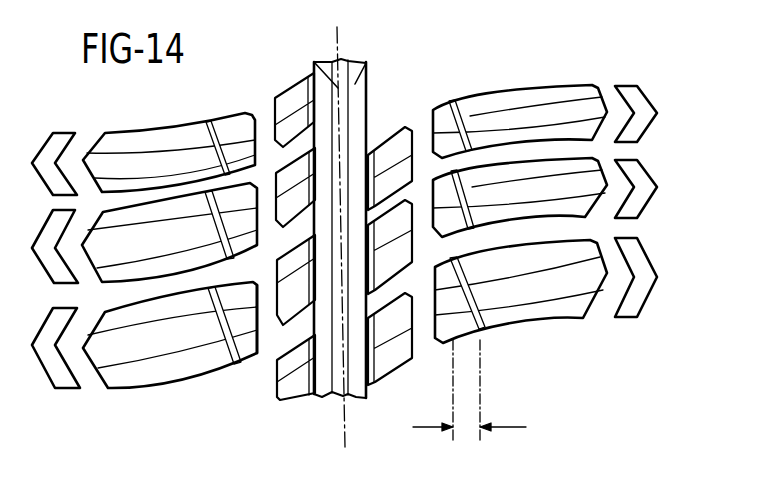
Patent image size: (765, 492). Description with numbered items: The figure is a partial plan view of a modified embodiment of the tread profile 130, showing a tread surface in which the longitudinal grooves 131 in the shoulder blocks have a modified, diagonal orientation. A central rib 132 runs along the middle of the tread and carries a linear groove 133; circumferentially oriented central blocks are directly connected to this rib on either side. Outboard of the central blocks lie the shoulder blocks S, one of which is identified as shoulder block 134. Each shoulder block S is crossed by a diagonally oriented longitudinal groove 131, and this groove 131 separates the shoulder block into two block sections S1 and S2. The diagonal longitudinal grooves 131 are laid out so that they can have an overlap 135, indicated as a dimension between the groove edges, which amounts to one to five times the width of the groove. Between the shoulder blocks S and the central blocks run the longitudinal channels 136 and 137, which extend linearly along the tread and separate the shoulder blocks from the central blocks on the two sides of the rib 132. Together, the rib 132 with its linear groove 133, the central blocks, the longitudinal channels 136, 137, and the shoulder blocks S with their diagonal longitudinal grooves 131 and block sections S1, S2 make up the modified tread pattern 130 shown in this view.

The tread pattern 130 is at (344, 239).
The longitudinal groove 131 is at (212, 128).
The rib 132 is at (358, 82).
The linear groove 133 is at (314, 62).
The tread block 134 is at (102, 360).
The overlap 135 is at (491, 391).
The longitudinal channel 136 is at (267, 333).
The longitudinal channel 137 is at (425, 332).
The shoulder block S is at (172, 373).
The block section S1 is at (128, 392).
The block section S2 is at (248, 363).